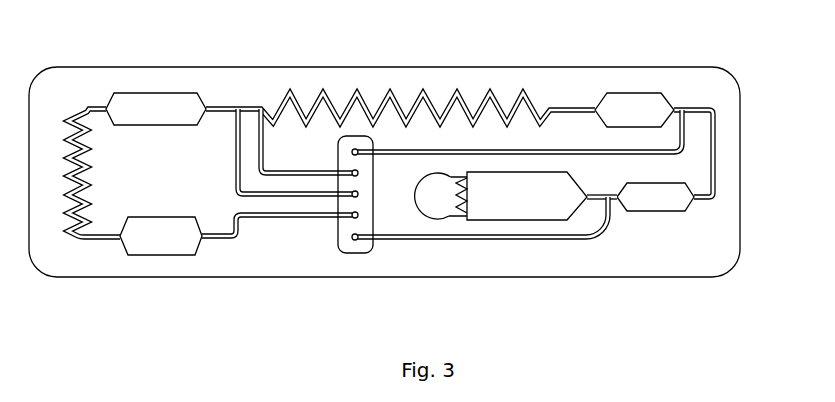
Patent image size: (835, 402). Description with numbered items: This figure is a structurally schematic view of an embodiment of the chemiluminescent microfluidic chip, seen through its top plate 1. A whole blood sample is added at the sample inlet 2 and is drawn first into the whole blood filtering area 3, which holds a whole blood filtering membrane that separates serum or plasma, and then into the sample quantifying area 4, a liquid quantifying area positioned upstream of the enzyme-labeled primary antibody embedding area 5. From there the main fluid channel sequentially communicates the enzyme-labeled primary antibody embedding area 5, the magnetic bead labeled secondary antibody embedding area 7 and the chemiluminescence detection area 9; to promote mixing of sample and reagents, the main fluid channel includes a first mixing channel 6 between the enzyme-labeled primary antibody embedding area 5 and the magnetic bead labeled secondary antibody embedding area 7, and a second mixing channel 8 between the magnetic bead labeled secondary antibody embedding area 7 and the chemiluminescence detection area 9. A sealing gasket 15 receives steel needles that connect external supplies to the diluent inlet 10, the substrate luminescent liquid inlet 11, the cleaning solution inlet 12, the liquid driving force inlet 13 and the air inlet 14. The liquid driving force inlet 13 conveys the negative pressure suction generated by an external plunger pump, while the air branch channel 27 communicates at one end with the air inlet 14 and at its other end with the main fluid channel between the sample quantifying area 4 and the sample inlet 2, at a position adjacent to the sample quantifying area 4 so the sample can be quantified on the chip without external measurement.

The top plate 1 is at (753, 188).
The sample inlet 2 is at (443, 202).
The whole blood filtering area 3 is at (553, 207).
The sample quantifying area 4 is at (653, 202).
The enzyme-labeled primary antibody embedding area 5 is at (633, 110).
The first mixing channel 6 is at (463, 93).
The magnetic bead labeled secondary antibody embedding area 7 is at (152, 109).
The second mixing channel 8 is at (74, 227).
The chemiluminescence detection area 9 is at (154, 243).
The diluent inlet 10 is at (353, 147).
The substrate luminescent liquid inlet 11 is at (358, 173).
The cleaning solution inlet 12 is at (374, 193).
The liquid driving force inlet 13 is at (374, 215).
The air inlet 14 is at (352, 237).
The sealing gasket 15 is at (355, 253).
The air branch channel 27 is at (492, 240).